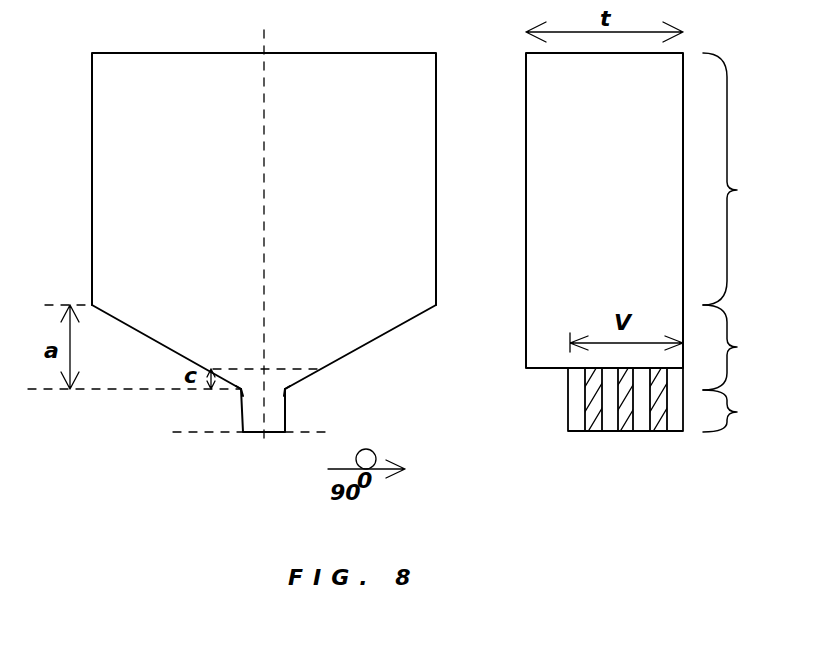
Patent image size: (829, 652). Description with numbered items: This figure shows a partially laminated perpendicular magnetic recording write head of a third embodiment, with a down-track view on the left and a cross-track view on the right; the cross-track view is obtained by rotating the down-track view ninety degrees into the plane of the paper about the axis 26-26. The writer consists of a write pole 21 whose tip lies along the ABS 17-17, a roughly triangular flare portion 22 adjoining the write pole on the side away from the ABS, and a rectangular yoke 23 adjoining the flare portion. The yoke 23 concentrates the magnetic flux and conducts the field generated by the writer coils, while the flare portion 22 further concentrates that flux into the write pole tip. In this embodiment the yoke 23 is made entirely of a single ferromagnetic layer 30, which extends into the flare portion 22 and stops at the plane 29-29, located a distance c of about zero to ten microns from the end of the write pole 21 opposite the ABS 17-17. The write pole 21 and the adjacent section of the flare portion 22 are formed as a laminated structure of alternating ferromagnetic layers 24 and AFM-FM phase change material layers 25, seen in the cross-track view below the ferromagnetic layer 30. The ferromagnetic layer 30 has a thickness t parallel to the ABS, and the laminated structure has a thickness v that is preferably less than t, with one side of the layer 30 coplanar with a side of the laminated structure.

The ABS 17 is at (250, 431).
The write pole 21 is at (252, 433).
The flare portion 22 is at (363, 327).
The yoke 23 is at (113, 206).
The ferromagnetic layers 24 is at (612, 398).
The AFM-FM phase change material layers 25 is at (597, 431).
The axis 26 is at (265, 240).
The plane 29 is at (211, 369).
The ferromagnetic layer 30 is at (555, 268).